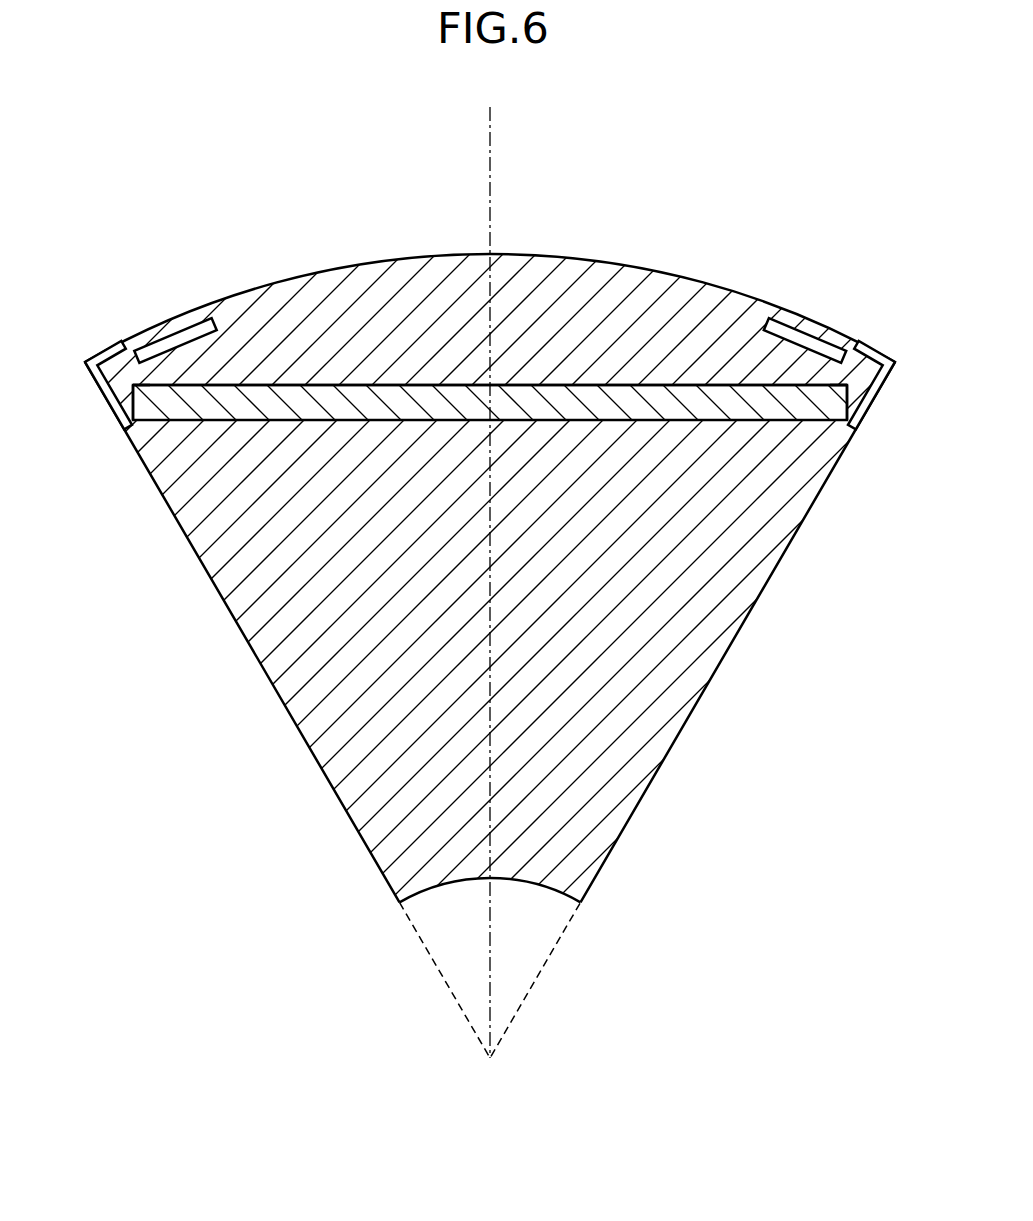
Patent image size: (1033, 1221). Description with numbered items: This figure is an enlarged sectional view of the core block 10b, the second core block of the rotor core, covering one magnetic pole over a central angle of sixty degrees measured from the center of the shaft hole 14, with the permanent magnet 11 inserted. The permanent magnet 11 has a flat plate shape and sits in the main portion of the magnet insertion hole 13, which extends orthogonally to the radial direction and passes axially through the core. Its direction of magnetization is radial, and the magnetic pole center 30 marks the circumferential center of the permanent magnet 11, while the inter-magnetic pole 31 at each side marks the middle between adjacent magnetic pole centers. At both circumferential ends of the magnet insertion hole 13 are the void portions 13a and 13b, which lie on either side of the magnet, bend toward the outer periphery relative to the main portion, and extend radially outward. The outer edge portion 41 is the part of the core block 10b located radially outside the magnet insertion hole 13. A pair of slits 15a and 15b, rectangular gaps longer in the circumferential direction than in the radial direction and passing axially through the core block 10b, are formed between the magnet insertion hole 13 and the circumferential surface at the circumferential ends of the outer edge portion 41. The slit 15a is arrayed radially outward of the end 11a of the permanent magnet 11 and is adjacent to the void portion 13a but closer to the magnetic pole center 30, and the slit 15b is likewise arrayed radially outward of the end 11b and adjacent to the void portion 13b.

The core block 10b is at (711, 627).
The permanent magnet 11 is at (725, 405).
The end 11a is at (172, 403).
The end 11b is at (793, 403).
The magnet insertion hole 13 is at (518, 389).
The void portion 13a is at (118, 396).
The void portion 13b is at (860, 395).
The shaft hole 14 is at (575, 898).
The slit 15a is at (172, 338).
The slit 15b is at (807, 333).
The magnetic pole center 30 is at (492, 133).
The inter-magnetic pole 31 is at (103, 392).
The outer edge portion 41 is at (250, 307).